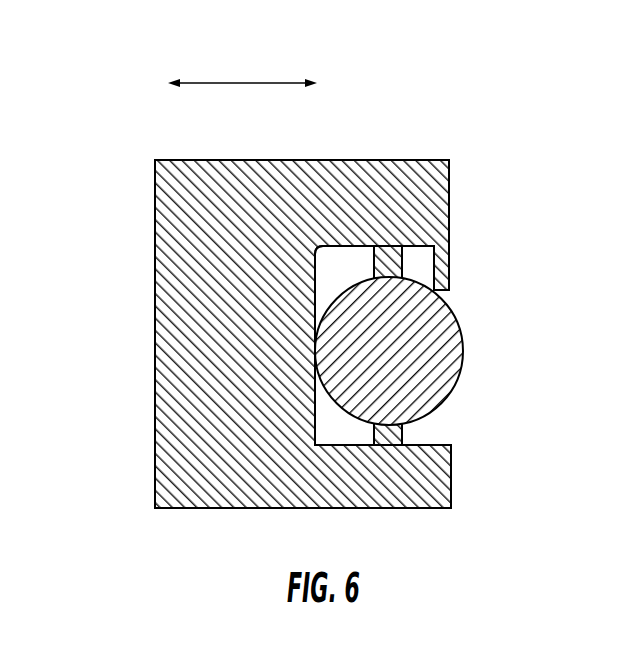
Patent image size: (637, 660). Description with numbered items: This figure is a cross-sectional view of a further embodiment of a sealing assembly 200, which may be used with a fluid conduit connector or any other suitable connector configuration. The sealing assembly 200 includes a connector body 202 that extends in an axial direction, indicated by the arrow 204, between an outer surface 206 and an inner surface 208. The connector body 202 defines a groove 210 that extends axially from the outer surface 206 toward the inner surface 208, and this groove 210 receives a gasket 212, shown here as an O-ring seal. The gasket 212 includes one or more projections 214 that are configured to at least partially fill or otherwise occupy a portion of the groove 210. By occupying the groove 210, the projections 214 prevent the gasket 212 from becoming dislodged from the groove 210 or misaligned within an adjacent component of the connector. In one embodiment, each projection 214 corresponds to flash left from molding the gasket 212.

The sealing assembly 200 is at (126, 128).
The connector body 202 is at (181, 435).
The arrow 204 is at (277, 83).
The outer surface 206 is at (451, 472).
The inner surface 208 is at (155, 326).
The groove 210 is at (332, 258).
The gasket 212 is at (463, 360).
The projections 214 is at (407, 270).